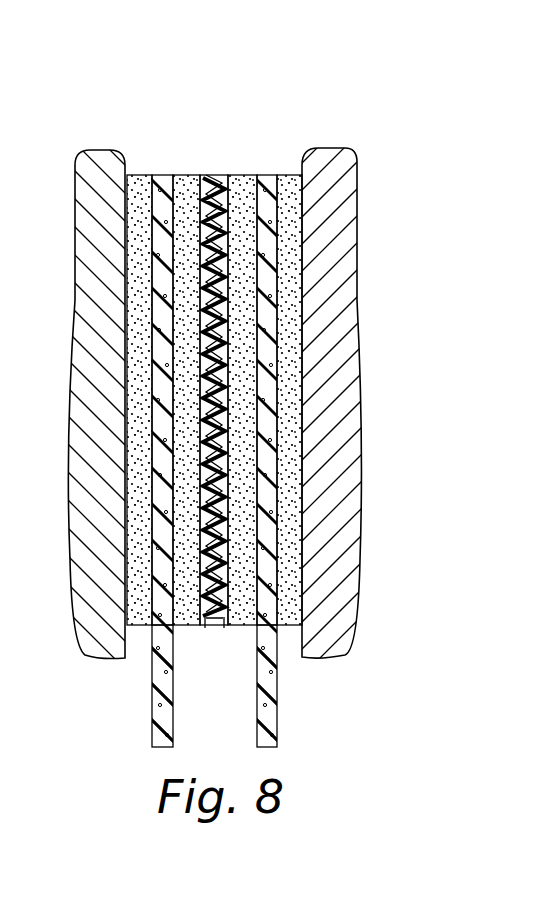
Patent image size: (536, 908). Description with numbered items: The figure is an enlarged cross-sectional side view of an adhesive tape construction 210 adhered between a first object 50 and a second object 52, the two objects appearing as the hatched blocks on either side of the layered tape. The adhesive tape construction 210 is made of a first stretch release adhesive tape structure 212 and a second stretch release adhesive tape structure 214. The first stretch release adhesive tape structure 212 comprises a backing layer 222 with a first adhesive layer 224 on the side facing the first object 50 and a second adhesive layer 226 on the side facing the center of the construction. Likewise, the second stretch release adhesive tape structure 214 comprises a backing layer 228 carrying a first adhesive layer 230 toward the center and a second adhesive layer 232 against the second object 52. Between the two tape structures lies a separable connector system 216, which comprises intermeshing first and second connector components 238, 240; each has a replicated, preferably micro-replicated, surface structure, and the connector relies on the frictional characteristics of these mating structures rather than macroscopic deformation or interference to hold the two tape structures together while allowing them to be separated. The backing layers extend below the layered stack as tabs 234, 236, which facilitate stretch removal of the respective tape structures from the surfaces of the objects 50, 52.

The adhesive tape construction 210 is at (216, 391).
The first stretch release adhesive tape structure 212 is at (108, 421).
The second stretch release adhesive tape structure 214 is at (325, 419).
The separable connector system 216 is at (218, 164).
The backing layer 222 is at (162, 256).
The first adhesive layer 224 is at (140, 226).
The second adhesive layer 226 is at (186, 374).
The backing layer 228 is at (270, 248).
The first adhesive layer 230 is at (250, 177).
The second adhesive layer 232 is at (292, 205).
The tab 234 is at (152, 688).
The tab 236 is at (272, 693).
The first connector component 238 is at (205, 628).
The second connector component 240 is at (224, 628).
The first object 50 is at (73, 433).
The second object 52 is at (357, 447).